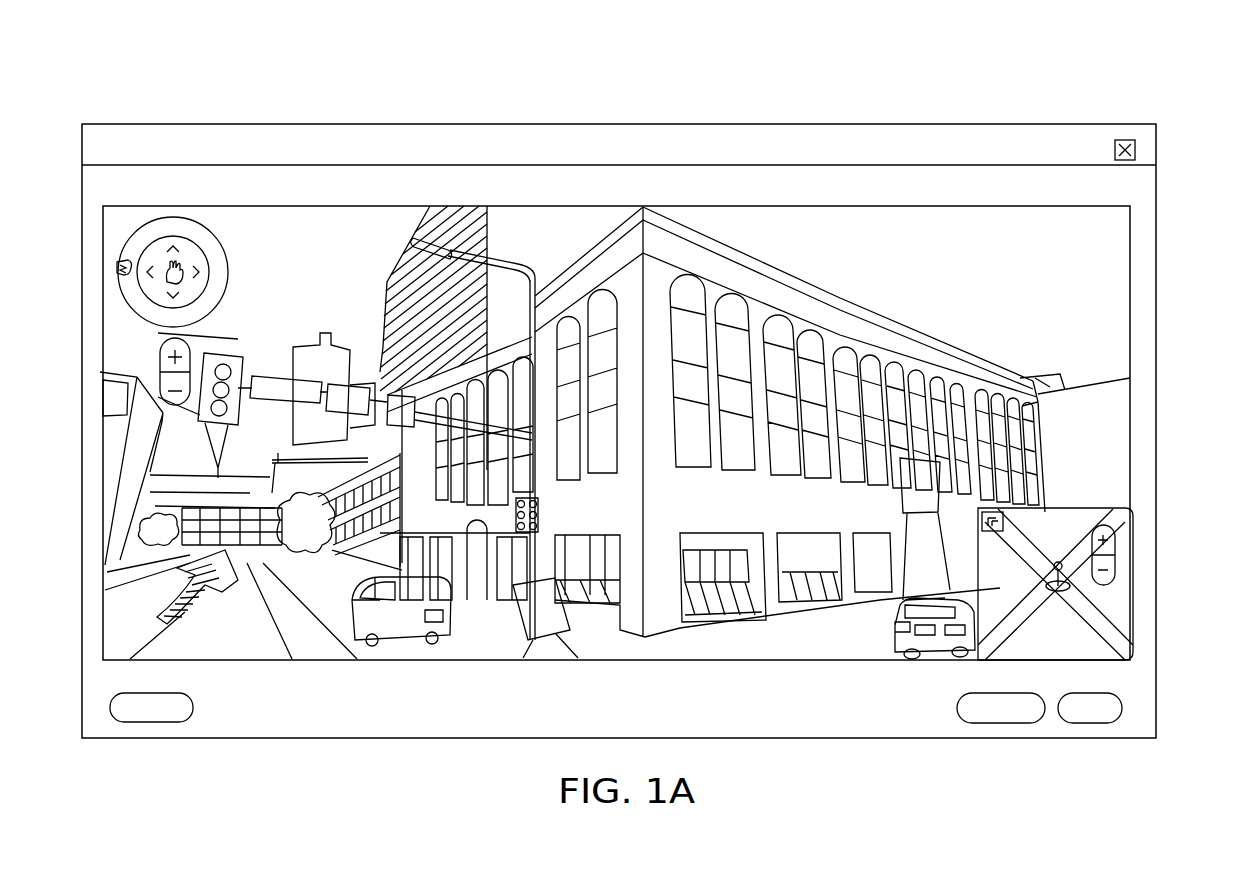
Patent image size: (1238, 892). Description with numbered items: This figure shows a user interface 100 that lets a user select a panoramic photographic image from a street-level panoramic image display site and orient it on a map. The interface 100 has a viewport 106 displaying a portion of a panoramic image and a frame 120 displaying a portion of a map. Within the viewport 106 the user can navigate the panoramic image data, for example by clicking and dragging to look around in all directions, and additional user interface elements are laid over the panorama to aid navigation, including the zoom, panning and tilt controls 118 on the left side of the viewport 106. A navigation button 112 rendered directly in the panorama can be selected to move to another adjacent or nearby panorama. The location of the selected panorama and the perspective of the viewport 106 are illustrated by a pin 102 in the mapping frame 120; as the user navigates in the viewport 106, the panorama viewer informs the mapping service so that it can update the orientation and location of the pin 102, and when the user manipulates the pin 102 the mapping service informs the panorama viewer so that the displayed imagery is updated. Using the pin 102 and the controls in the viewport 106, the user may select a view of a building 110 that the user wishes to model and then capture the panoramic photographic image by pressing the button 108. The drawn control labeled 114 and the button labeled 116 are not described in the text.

The user interface 100 is at (1231, 93).
The pin 102 is at (1072, 590).
The viewport 106 is at (1133, 217).
The button 108 is at (1000, 724).
The building 110 is at (947, 352).
The navigation button 112 is at (205, 604).
The map expand control 114 is at (997, 512).
The done button 116 is at (1092, 724).
The zoom, panning and tilt controls 118 is at (117, 263).
The frame 120 is at (1160, 508).